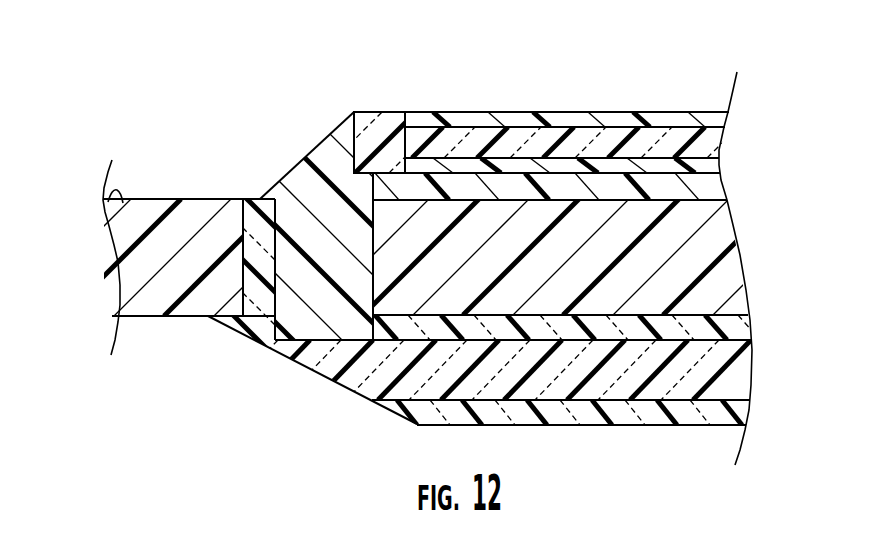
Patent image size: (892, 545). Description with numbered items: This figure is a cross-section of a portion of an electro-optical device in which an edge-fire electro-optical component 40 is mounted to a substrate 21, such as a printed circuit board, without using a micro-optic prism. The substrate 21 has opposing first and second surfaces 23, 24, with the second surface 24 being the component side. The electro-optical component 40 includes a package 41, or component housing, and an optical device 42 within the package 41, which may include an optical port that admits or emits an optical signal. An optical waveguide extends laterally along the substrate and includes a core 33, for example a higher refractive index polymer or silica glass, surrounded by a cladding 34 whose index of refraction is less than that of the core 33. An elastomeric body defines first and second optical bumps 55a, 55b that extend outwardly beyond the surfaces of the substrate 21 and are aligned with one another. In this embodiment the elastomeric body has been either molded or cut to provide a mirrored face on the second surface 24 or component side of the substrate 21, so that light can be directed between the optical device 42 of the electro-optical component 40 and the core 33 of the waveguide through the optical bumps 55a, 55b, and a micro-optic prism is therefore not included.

The substrate 21 is at (141, 209).
The second surface 24 is at (98, 204).
The first surface 23 is at (153, 320).
The first optical bump 55a is at (300, 178).
The second optical bump 55b is at (317, 328).
The electro-optical component 40 is at (546, 116).
The package 41 is at (667, 120).
The optical device 42 is at (383, 127).
The core 33 is at (742, 373).
The cladding 34 is at (742, 330).